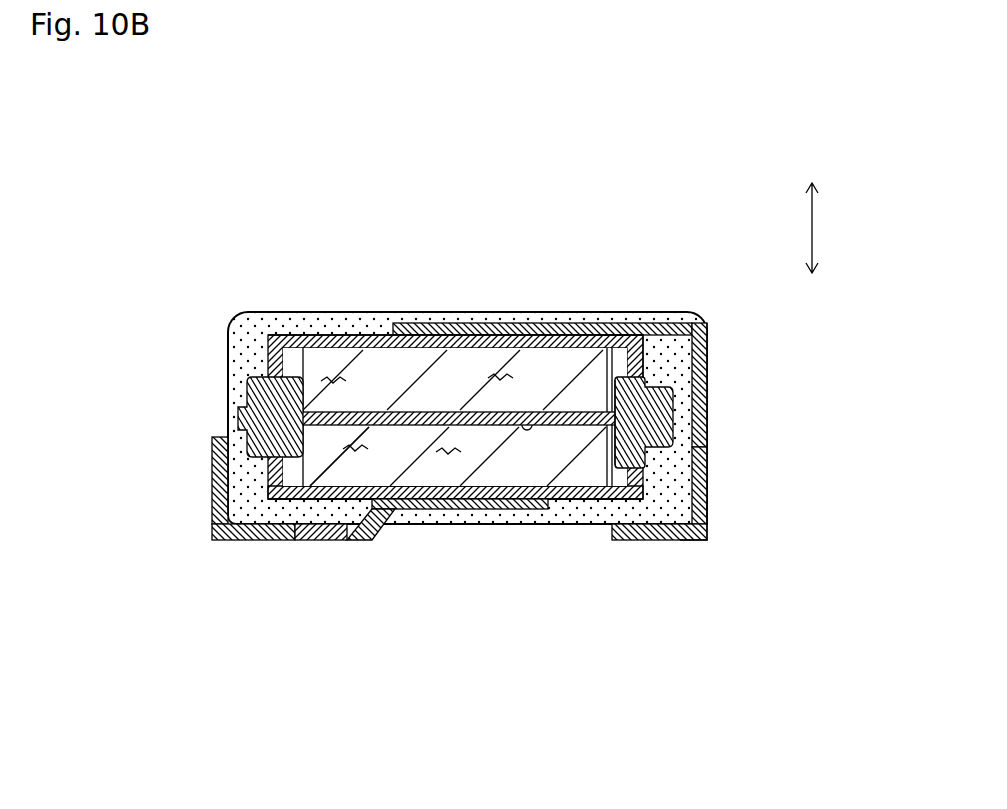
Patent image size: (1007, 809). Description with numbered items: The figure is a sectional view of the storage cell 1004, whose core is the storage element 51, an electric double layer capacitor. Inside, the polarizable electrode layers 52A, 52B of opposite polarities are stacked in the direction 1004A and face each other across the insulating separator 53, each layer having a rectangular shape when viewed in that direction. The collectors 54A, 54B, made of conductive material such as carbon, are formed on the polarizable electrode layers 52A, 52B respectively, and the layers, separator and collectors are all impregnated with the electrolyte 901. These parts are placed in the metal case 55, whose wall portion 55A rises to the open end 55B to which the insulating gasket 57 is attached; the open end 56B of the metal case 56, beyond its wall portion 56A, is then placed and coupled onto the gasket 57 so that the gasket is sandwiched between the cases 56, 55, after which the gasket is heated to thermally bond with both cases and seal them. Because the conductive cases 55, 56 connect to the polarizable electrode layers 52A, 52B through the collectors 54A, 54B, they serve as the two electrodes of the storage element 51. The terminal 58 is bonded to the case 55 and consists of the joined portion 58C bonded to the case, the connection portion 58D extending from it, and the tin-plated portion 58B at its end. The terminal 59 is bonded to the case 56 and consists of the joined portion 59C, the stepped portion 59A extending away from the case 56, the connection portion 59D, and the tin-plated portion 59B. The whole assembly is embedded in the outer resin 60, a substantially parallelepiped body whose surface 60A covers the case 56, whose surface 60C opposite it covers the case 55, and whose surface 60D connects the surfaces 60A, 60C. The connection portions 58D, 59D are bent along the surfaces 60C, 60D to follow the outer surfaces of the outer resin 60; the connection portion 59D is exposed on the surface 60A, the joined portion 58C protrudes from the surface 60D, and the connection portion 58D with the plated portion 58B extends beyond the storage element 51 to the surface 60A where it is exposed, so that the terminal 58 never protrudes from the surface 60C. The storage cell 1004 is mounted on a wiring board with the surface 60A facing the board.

The storage element 51 is at (277, 372).
The polarizable electrode layer 52A is at (457, 372).
The polarizable electrode layer 52B is at (462, 466).
The separator 53 is at (376, 414).
The collector 54A is at (573, 340).
The collector 54B is at (592, 499).
The case 55 is at (320, 334).
The first terminal lead portion 55A is at (645, 410).
The open end 55B is at (642, 343).
The case 56 is at (571, 492).
The second terminal side portion 56A is at (735, 476).
The open end 56B is at (717, 527).
The gasket 57 is at (673, 422).
The terminal 58 is at (706, 352).
The plated portion 58B is at (662, 538).
The joined portion 58C is at (534, 330).
The connection portion 58D is at (700, 385).
The terminal 59 is at (407, 503).
The stepped portion 59A is at (368, 536).
The plated portion 59B is at (230, 543).
The joined portion 59C is at (500, 507).
The connection portion 59D is at (312, 531).
The outer resin 60 is at (240, 342).
The surface 60A is at (420, 513).
The surface 60C is at (417, 321).
The surface 60D is at (227, 387).
The electrolyte 901 is at (340, 472).
The storage cell 1004 is at (728, 232).
The direction 1004A is at (814, 240).